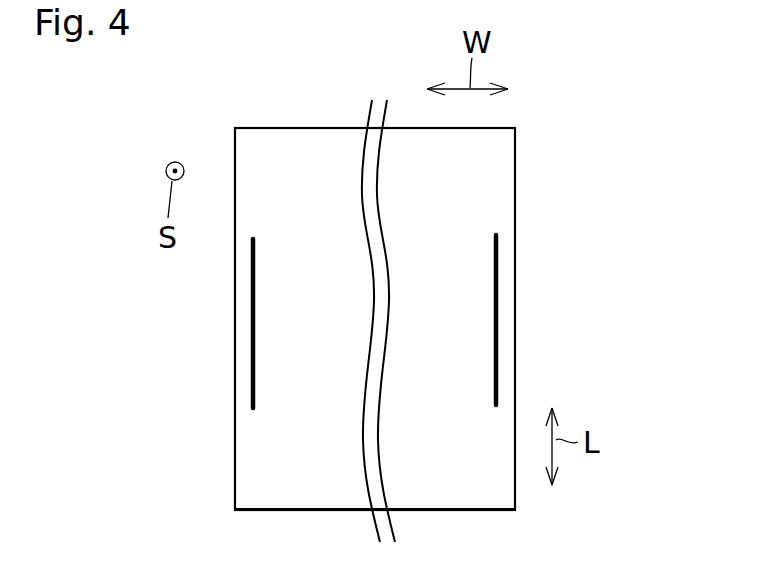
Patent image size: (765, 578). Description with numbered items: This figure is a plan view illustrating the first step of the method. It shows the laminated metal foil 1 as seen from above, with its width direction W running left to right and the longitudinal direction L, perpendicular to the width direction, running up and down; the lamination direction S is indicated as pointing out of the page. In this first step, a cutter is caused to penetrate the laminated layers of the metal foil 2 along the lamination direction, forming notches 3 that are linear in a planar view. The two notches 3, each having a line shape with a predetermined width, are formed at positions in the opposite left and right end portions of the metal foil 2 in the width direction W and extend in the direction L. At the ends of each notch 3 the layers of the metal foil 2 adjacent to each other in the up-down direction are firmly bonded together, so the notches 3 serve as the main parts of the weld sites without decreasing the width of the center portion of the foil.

The laminated metal foil 1 is at (520, 338).
The metal foil 2 is at (468, 497).
The notch 3 is at (253, 312).